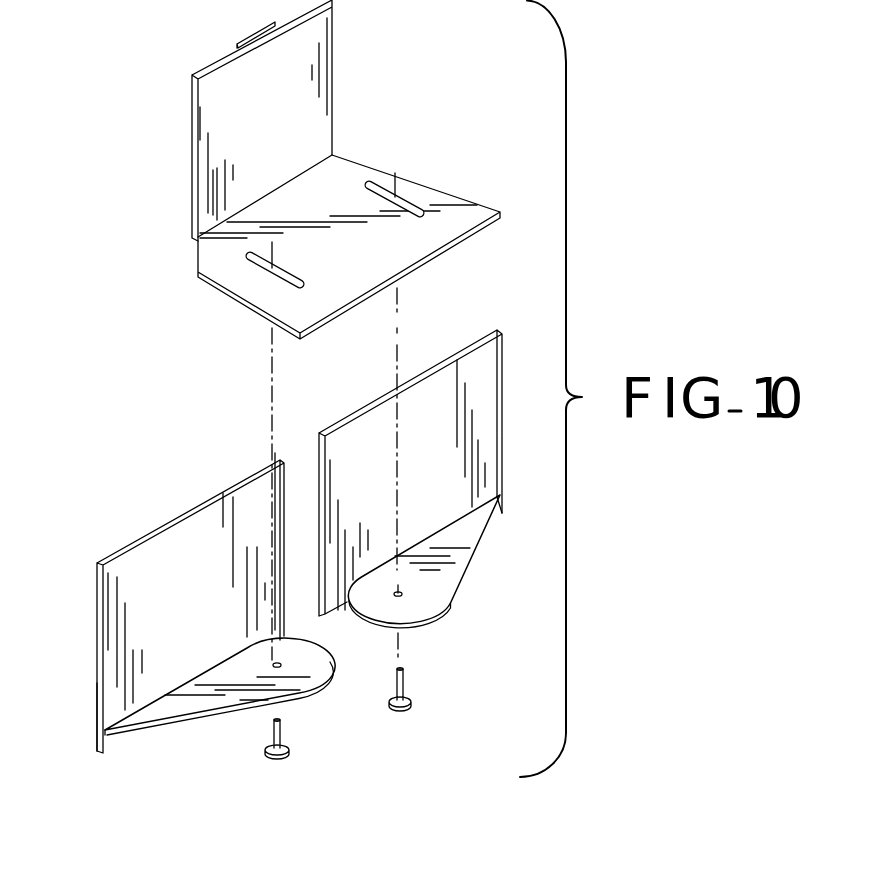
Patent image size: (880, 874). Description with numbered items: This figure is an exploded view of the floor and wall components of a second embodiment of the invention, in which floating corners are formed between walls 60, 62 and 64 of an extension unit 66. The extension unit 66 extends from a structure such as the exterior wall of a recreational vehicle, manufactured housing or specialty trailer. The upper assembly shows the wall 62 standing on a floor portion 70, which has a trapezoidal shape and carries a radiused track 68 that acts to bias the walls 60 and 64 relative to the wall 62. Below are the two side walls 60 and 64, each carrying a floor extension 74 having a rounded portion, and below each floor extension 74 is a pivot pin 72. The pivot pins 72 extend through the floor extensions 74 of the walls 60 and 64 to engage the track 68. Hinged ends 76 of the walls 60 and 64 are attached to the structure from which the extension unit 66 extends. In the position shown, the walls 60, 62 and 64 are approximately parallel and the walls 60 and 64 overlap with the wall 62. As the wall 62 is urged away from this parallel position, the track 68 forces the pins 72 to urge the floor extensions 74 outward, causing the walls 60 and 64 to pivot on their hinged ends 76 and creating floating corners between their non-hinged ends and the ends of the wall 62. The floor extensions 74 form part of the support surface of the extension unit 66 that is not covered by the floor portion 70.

The wall 60 is at (495, 377).
The wall 62 is at (197, 150).
The wall 64 is at (165, 553).
The extension unit 66 is at (565, 389).
The radiused track 68 is at (377, 184).
The floor portion 70 is at (450, 212).
The pivot pin 72 is at (272, 733).
The floor extension 74 is at (440, 577).
The hinged end 76 is at (503, 446).